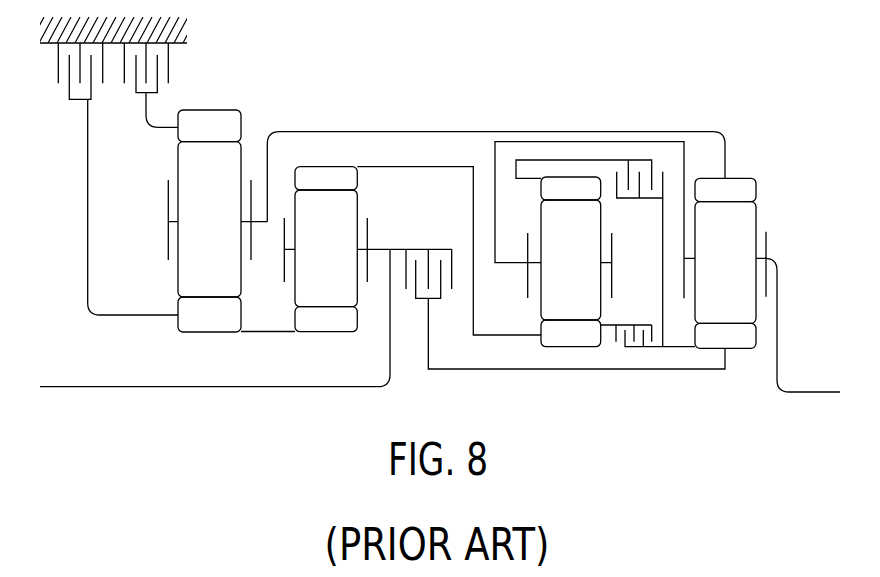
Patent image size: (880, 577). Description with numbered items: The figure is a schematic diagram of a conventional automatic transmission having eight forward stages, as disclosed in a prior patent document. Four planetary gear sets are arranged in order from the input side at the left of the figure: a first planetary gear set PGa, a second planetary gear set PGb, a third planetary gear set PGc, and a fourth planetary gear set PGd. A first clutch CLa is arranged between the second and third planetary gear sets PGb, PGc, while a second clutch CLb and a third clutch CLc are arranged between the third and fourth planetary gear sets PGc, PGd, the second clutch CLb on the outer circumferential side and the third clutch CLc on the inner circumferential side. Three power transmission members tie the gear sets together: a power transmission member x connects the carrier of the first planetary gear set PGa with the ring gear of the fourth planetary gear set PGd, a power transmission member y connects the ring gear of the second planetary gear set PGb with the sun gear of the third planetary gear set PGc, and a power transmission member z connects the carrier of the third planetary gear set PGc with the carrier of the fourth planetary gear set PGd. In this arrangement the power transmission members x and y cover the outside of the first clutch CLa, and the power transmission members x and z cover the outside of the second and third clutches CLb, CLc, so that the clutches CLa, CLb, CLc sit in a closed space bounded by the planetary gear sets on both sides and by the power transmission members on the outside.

The first planetary gear set PGa is at (214, 99).
The second planetary gear set PGb is at (329, 150).
The third planetary gear set PGc is at (554, 168).
The fourth planetary gear set PGd is at (747, 165).
The first clutch CLa is at (417, 248).
The second clutch CLb is at (640, 158).
The third clutch CLc is at (631, 348).
The power transmission member x is at (405, 132).
The power transmission member y is at (428, 165).
The power transmission member z is at (597, 142).